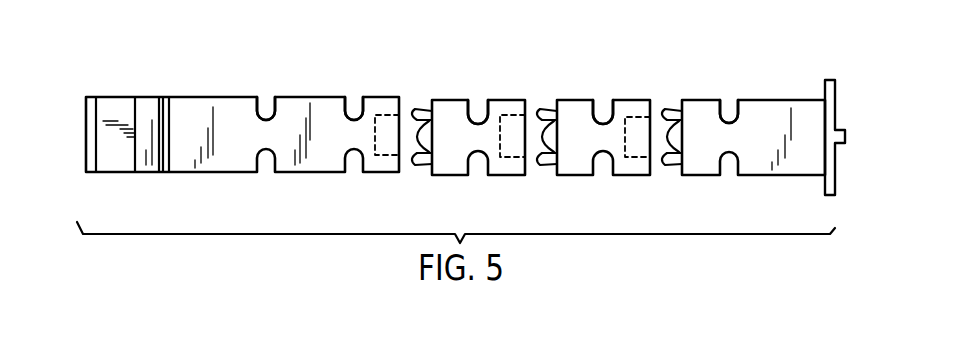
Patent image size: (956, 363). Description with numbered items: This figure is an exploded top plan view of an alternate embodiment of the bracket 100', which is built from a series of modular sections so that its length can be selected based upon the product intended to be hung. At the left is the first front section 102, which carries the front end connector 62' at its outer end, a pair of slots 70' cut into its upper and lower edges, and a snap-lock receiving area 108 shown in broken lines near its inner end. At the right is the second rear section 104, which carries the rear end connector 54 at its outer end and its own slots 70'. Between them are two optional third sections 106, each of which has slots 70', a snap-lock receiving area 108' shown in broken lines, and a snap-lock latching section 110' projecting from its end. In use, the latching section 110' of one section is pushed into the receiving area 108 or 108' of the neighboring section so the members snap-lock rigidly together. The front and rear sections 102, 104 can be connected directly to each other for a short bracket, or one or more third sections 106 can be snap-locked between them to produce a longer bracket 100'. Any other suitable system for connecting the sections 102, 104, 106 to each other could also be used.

The bracket 100' is at (457, 108).
The front end connector 62' is at (107, 117).
The first front section 102 is at (328, 96).
The slots 70' is at (507, 87).
The snap-lock receiving area 108 is at (397, 86).
The third sections 106 is at (521, 102).
The snap-lock receiving area 108' is at (585, 87).
The snap-lock latching section 110' is at (558, 133).
The second rear section 104 is at (800, 100).
The rear end connector 54 is at (838, 90).